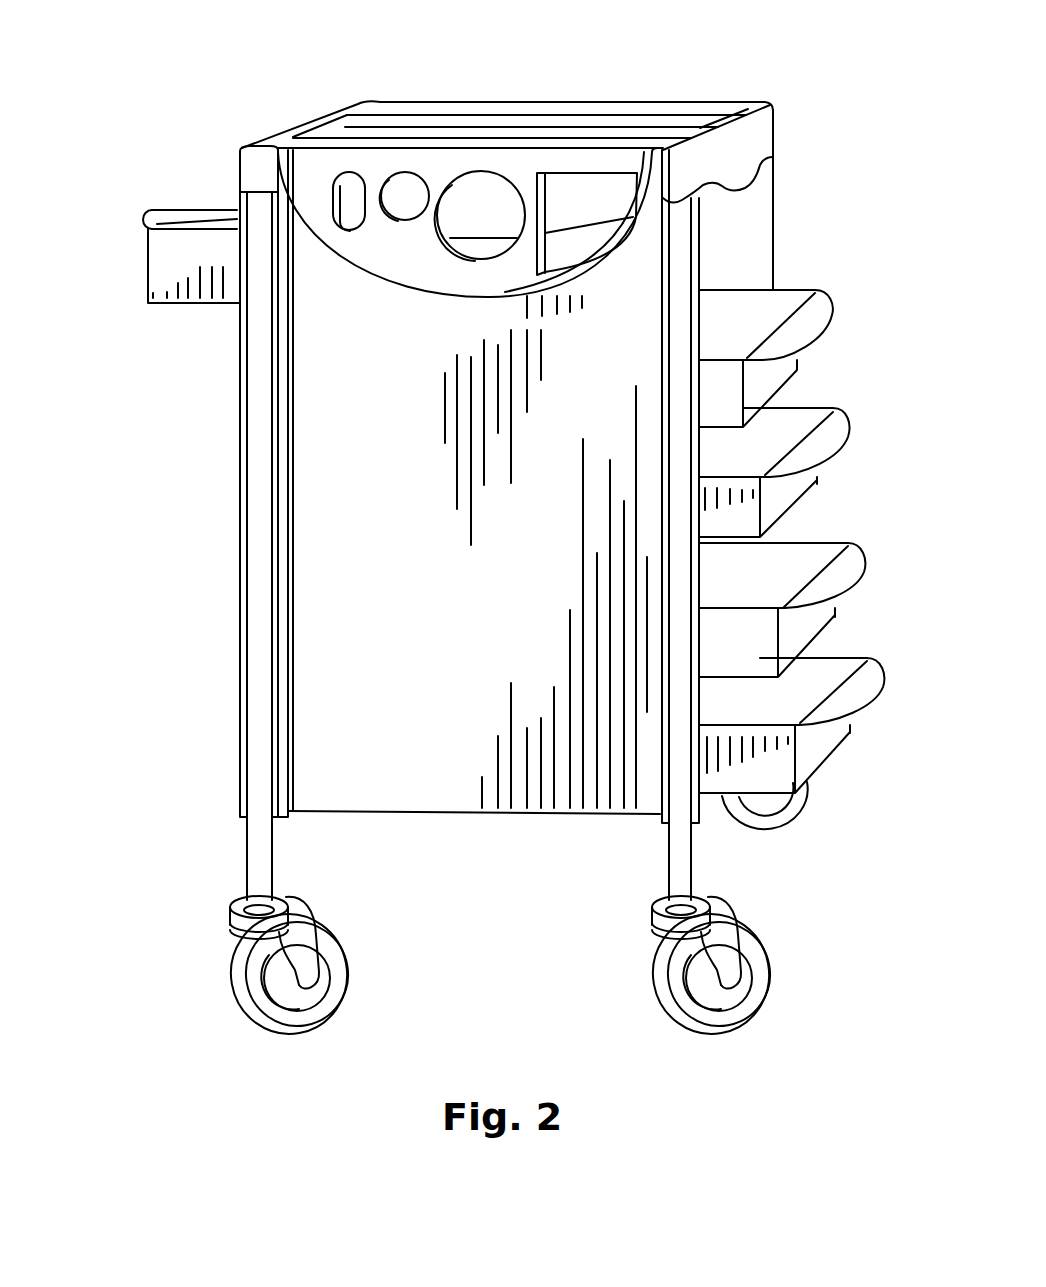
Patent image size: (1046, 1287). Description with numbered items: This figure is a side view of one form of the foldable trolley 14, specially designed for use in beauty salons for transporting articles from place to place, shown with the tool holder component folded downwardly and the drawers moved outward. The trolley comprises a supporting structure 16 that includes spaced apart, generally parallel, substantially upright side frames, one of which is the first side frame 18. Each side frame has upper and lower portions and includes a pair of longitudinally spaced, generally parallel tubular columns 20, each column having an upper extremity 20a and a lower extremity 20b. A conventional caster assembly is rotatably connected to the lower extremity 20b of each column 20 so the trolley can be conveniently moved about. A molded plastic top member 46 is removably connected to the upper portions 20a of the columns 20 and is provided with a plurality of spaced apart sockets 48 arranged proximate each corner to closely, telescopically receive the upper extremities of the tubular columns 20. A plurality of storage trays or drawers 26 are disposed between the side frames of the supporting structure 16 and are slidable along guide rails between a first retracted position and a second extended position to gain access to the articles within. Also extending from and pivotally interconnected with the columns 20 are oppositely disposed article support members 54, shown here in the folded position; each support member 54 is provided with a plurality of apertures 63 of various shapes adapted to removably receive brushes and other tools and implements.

The foldable trolley 14 is at (292, 108).
The supporting structure 16 is at (779, 199).
The first side frame 18 is at (238, 475).
The tubular column 20 is at (255, 373).
The upper extremity of column 20a is at (257, 235).
The lower extremity of column 20b is at (253, 890).
The storage tray 26 is at (823, 323).
The molded plastic top member 46 is at (745, 143).
The socket 48 is at (253, 197).
The article support member 54 is at (430, 273).
The aperture 63 is at (357, 182).